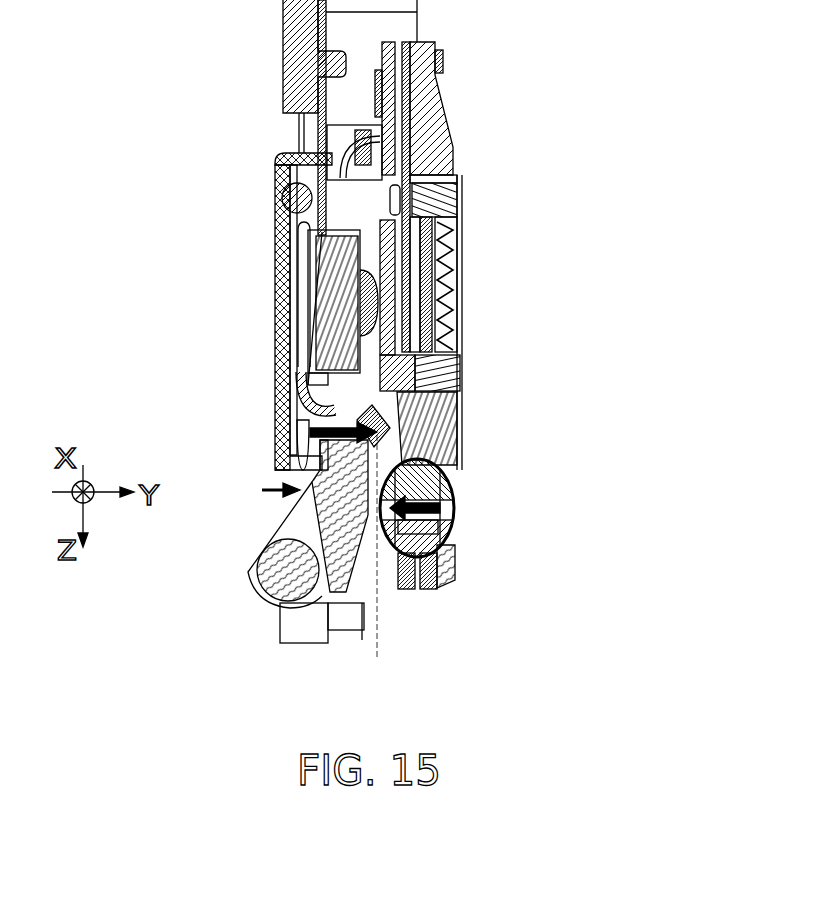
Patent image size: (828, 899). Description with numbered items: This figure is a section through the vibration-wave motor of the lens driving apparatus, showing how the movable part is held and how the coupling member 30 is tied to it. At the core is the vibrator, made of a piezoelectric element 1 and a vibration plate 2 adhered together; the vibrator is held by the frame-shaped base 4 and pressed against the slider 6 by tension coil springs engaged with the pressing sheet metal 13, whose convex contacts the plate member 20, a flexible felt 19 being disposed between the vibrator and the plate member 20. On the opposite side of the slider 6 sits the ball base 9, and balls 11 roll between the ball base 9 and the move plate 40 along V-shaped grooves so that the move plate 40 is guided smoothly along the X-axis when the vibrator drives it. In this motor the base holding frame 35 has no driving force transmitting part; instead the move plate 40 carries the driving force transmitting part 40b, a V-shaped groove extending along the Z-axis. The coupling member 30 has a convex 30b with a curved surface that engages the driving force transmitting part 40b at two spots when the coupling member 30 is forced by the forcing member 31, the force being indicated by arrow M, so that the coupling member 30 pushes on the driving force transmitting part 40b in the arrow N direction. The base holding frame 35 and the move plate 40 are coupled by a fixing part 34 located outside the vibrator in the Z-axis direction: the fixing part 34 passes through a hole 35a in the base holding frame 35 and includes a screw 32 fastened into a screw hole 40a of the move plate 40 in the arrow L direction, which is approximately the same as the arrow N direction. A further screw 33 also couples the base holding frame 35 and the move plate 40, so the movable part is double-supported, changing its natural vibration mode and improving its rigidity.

The piezoelectric element 1 is at (450, 388).
The vibration plate 2 is at (455, 422).
The base 4 is at (442, 208).
The slider 6 is at (325, 316).
The ball base 9 is at (300, 400).
The balls 11 is at (280, 187).
The pressing sheet metal 13 is at (447, 342).
The felt 19 is at (415, 286).
The plate member 20 is at (434, 240).
The coupling member 30 is at (340, 582).
The forcing member 31 is at (280, 505).
The screw 32 is at (452, 538).
The screw 33 is at (438, 72).
The fixing part 34 is at (455, 520).
The base holding frame 35 is at (452, 448).
The hole 35a is at (433, 560).
The move plate 40 is at (278, 328).
The screw hole 40a is at (392, 568).
The driving force transmitting part 40b is at (452, 480).
The convex 30b is at (417, 508).
The arrow N direction N is at (297, 426).
The arrow M is at (268, 491).
The arrow L direction L is at (450, 560).